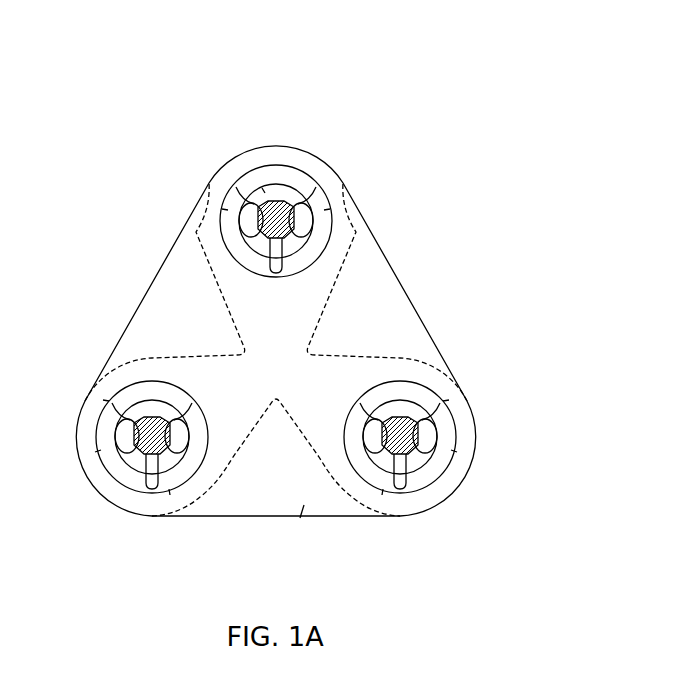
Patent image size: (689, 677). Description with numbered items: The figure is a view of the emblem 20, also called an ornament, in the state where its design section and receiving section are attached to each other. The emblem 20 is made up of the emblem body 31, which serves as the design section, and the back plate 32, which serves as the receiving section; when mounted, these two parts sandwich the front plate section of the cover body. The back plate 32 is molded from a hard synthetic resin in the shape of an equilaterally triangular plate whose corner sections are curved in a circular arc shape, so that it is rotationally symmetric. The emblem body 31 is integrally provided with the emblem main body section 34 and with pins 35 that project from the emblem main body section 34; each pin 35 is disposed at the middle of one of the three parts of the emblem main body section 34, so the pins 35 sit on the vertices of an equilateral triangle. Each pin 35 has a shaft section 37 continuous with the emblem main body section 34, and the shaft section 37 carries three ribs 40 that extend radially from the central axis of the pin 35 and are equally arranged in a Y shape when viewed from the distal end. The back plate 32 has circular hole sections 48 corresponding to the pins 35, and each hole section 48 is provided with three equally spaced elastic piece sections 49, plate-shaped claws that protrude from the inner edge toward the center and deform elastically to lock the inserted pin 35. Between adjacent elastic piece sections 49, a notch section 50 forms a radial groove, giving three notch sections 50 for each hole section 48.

The emblem 20 is at (385, 70).
The emblem body 31 is at (330, 296).
The back plate 32 is at (419, 315).
The emblem main body section 34 is at (311, 460).
The pin 35 is at (317, 182).
The shaft section 37 is at (289, 195).
The rib 40 is at (262, 188).
The hole section 48 is at (296, 233).
The elastic piece section 49 is at (275, 186).
The notch section 50 is at (247, 200).